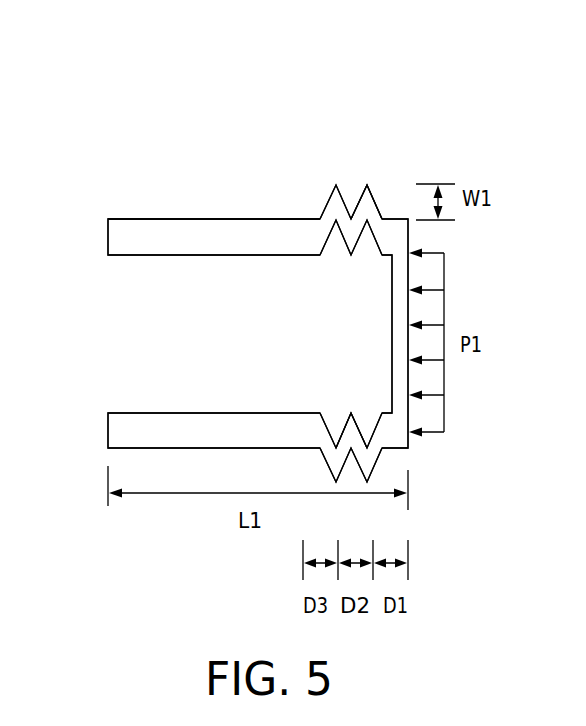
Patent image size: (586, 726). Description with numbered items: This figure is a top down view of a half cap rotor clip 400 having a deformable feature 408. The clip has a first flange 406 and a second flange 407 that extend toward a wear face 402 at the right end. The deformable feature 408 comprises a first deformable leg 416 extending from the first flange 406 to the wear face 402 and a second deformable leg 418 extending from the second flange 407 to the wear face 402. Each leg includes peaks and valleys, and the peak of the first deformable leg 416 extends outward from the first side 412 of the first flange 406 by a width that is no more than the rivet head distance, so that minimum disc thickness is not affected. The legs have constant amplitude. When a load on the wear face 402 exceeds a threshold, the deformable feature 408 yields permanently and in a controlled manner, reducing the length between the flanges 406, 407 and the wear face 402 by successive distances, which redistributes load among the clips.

The half cap rotor clip 400 is at (101, 106).
The wear face 402 is at (410, 233).
The first flange 406 is at (145, 237).
The second flange 407 is at (114, 432).
The deformable feature 408 is at (349, 153).
The first side 412 is at (175, 219).
The first deformable leg 416 is at (366, 200).
The second deformable leg 418 is at (353, 433).